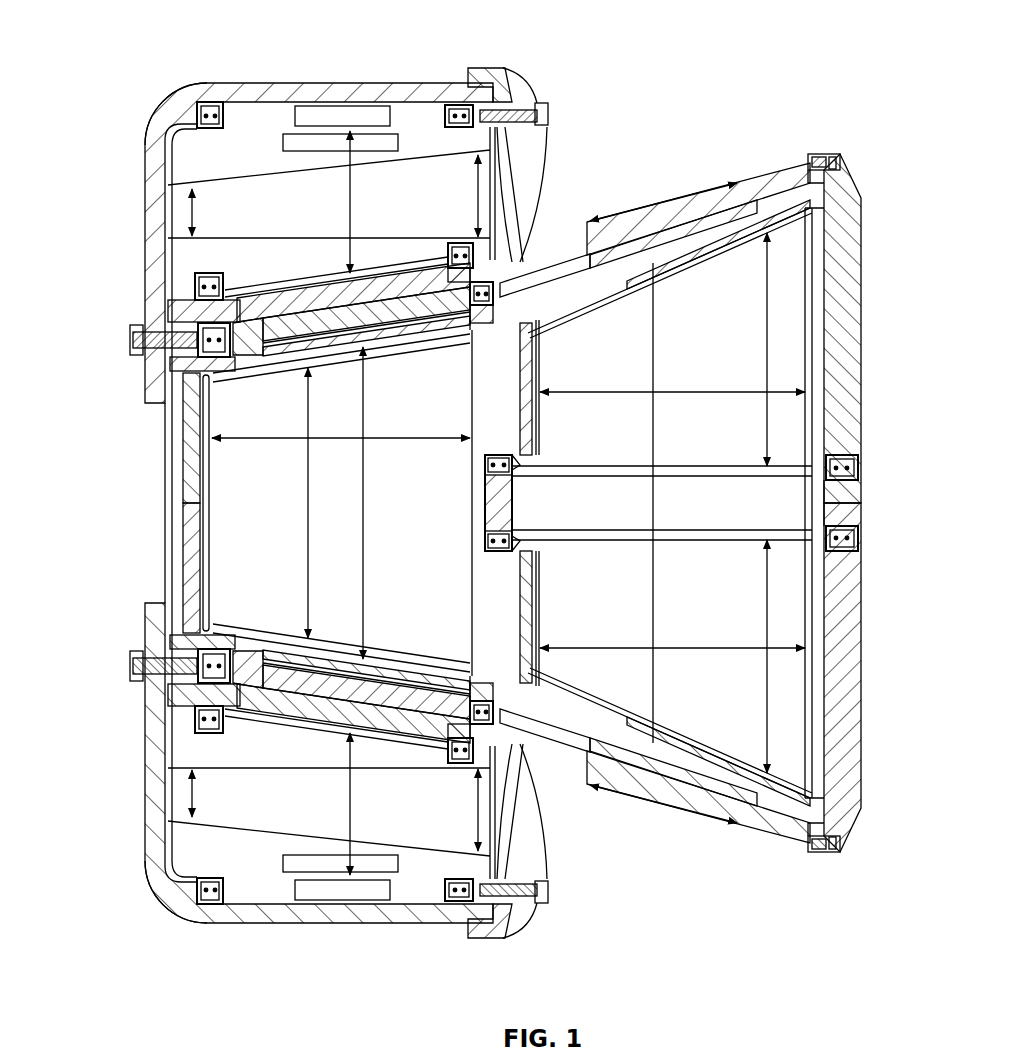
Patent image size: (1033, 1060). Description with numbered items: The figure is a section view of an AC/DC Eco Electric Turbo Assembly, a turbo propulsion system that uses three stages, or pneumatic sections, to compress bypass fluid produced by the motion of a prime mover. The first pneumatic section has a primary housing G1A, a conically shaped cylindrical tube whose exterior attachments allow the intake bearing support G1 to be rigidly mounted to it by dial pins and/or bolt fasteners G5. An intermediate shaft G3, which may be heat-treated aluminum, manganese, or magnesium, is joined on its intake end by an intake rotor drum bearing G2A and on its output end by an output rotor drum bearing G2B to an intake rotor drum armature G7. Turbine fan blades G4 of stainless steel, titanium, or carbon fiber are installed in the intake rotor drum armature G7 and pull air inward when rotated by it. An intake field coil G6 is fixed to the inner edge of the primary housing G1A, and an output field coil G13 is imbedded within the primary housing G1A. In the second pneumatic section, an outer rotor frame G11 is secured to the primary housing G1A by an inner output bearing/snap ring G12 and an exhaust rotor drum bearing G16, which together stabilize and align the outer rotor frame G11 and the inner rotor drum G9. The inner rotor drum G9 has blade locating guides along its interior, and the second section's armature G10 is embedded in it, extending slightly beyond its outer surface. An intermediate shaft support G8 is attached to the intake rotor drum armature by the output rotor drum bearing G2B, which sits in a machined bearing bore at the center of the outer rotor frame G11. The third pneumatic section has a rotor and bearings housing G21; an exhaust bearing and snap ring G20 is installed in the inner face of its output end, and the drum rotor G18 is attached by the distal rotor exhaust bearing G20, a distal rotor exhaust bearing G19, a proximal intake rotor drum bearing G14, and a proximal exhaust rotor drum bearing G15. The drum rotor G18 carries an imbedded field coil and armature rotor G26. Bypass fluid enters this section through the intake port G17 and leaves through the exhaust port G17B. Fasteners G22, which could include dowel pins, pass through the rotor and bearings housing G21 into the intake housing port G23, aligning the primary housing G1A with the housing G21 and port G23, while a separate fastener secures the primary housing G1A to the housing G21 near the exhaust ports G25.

The intake bearing support G1 is at (863, 195).
The primary housing G1A is at (730, 184).
The intake rotor drum bearing G2A is at (862, 468).
The output rotor drum bearing G2B is at (482, 540).
The intermediate shaft G3 is at (862, 504).
The turbine fan blades G4 is at (565, 392).
The dial pins and/or bolt fasteners G5 is at (830, 158).
The intake field coil G6 is at (687, 235).
The intake rotor drum armature G7 is at (655, 360).
The intermediate shaft support G8 is at (518, 607).
The inner rotor drum G9 is at (374, 442).
The armature G10 is at (365, 550).
The outer rotor frame G11 is at (510, 307).
The inner output bearing/snap ring G12 is at (502, 294).
The output field coil G13 is at (372, 300).
The proximal intake rotor drum bearing G14 is at (486, 253).
The proximal exhaust rotor drum bearing G15 is at (192, 286).
The exhaust rotor drum bearing G16 is at (196, 340).
The intake port G17 is at (352, 226).
The exhaust port G17B is at (195, 212).
The drum rotor G18 is at (352, 200).
The distal rotor exhaust bearing G19 is at (458, 104).
The exhaust bearing and snap ring G20 is at (214, 104).
The rotor and bearings housing G21 is at (186, 108).
The fasteners G22 is at (551, 111).
The intake housing port G23 is at (518, 149).
The exhaust ports G25 is at (145, 218).
The field coil and armature rotor G26 is at (341, 118).